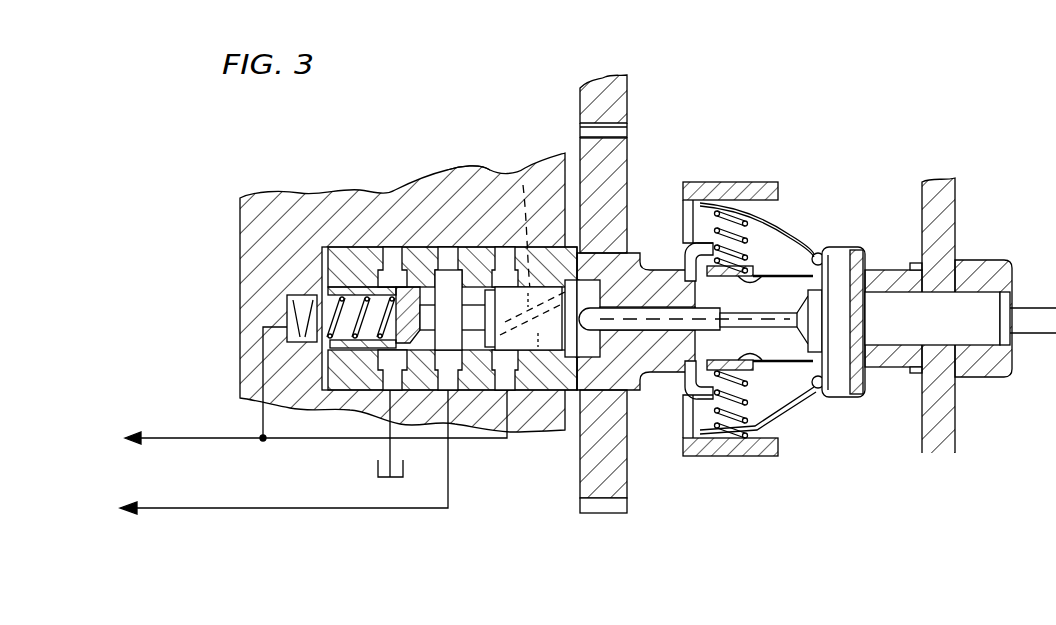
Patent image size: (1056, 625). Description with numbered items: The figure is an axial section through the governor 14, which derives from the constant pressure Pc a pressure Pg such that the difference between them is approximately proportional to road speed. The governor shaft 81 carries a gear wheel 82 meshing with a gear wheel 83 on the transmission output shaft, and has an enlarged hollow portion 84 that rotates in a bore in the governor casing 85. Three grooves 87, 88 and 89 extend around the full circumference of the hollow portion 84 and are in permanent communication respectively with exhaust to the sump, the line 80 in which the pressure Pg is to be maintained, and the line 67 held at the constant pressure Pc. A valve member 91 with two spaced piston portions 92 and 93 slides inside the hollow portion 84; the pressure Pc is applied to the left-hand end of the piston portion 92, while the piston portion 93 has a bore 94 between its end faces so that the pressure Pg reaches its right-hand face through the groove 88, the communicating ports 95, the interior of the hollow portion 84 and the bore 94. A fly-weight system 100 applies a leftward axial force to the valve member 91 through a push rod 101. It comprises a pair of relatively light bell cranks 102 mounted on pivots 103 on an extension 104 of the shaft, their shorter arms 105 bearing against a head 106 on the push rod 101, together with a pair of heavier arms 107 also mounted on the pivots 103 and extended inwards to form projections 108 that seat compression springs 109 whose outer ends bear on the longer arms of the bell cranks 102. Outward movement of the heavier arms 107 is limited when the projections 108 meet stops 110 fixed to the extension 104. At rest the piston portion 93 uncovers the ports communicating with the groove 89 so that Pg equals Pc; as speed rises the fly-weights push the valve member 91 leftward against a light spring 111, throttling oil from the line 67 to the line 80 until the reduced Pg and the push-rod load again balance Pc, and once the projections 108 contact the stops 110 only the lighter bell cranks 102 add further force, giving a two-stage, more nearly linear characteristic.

The governor 14 is at (389, 192).
The governor casing 85 is at (459, 193).
The piston portion 92 is at (378, 270).
The communicating ports 95 is at (447, 254).
The bore 94 is at (522, 184).
The gear wheel 83 is at (617, 103).
The gear wheel 82 is at (605, 165).
The governor shaft 81 is at (648, 290).
The push rod 101 is at (663, 320).
The head 106 is at (808, 337).
The stops 110 is at (686, 258).
The heavier arms 107 is at (700, 190).
The projections 108 is at (748, 270).
The compression springs 109 is at (731, 232).
The bell cranks 102 is at (780, 223).
The pivots 103 is at (830, 250).
The extension 104 is at (850, 393).
The shorter arms 105 is at (862, 270).
The fly-weight system 100 is at (806, 218).
The light spring 111 is at (287, 308).
The line 67 is at (192, 437).
The line 80 is at (190, 507).
The groove 87 is at (375, 402).
The groove 88 is at (442, 392).
The groove 89 is at (512, 373).
The valve member 91 is at (477, 362).
The piston portion 93 is at (545, 378).
The enlarged hollow portion 84 is at (548, 380).